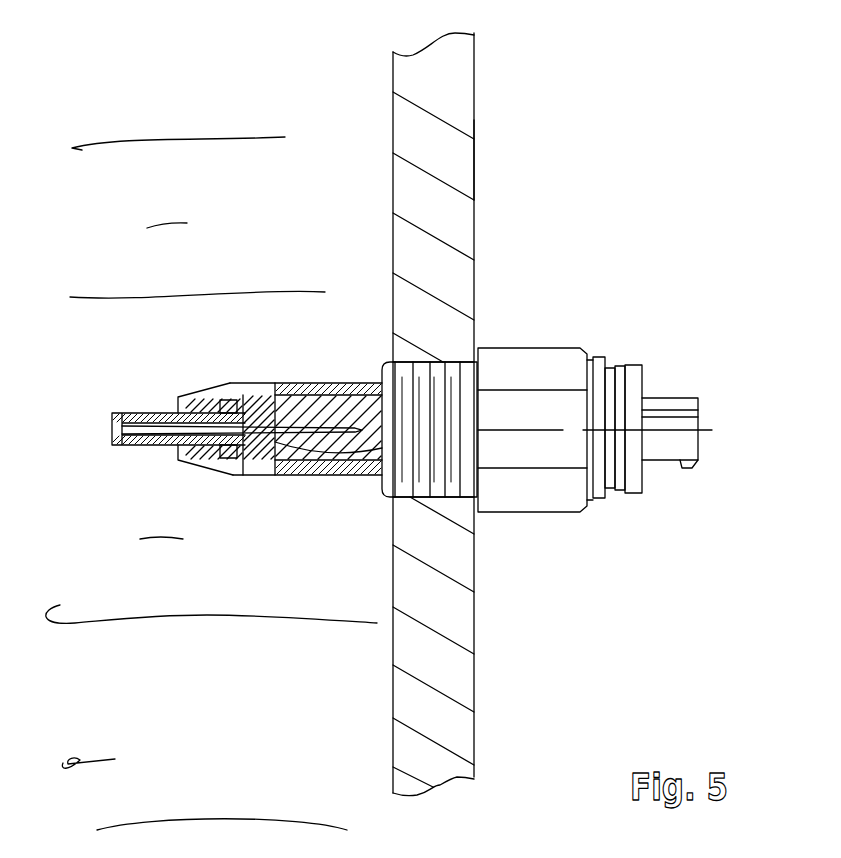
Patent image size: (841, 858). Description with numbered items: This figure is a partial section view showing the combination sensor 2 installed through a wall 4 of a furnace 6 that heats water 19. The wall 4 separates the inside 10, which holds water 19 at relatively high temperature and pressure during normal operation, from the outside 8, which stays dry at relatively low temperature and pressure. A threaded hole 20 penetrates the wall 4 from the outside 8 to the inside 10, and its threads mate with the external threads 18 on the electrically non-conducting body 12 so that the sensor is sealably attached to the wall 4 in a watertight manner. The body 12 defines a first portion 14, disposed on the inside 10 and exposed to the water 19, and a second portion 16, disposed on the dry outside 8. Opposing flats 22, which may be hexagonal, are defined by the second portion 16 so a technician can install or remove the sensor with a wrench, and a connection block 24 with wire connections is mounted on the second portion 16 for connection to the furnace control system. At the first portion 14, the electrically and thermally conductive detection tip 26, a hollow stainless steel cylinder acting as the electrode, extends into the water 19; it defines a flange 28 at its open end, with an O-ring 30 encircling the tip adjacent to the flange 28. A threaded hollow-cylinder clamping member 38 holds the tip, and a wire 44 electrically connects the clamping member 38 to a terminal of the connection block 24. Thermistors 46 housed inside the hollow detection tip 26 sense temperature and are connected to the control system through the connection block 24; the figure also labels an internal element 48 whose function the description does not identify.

The combination sensor 2 is at (658, 210).
The wall 4 is at (474, 132).
The furnace 6 is at (474, 172).
The outside 8 is at (676, 592).
The inside 10 is at (172, 80).
The body 12 is at (540, 513).
The first portion 14 is at (177, 398).
The second portion 16 is at (597, 356).
The external threads 18 is at (433, 360).
The water 19 is at (162, 201).
The threaded hole 20 is at (433, 497).
The opposing flats 22 is at (515, 347).
The connection block 24 is at (660, 398).
The detection tip 26 is at (111, 413).
The flange 28 is at (243, 453).
The O-ring 30 is at (217, 403).
The clamping member 38 is at (260, 405).
The wire 44 is at (333, 460).
The thermistors 46 is at (143, 447).
The insulating body 48 is at (340, 428).